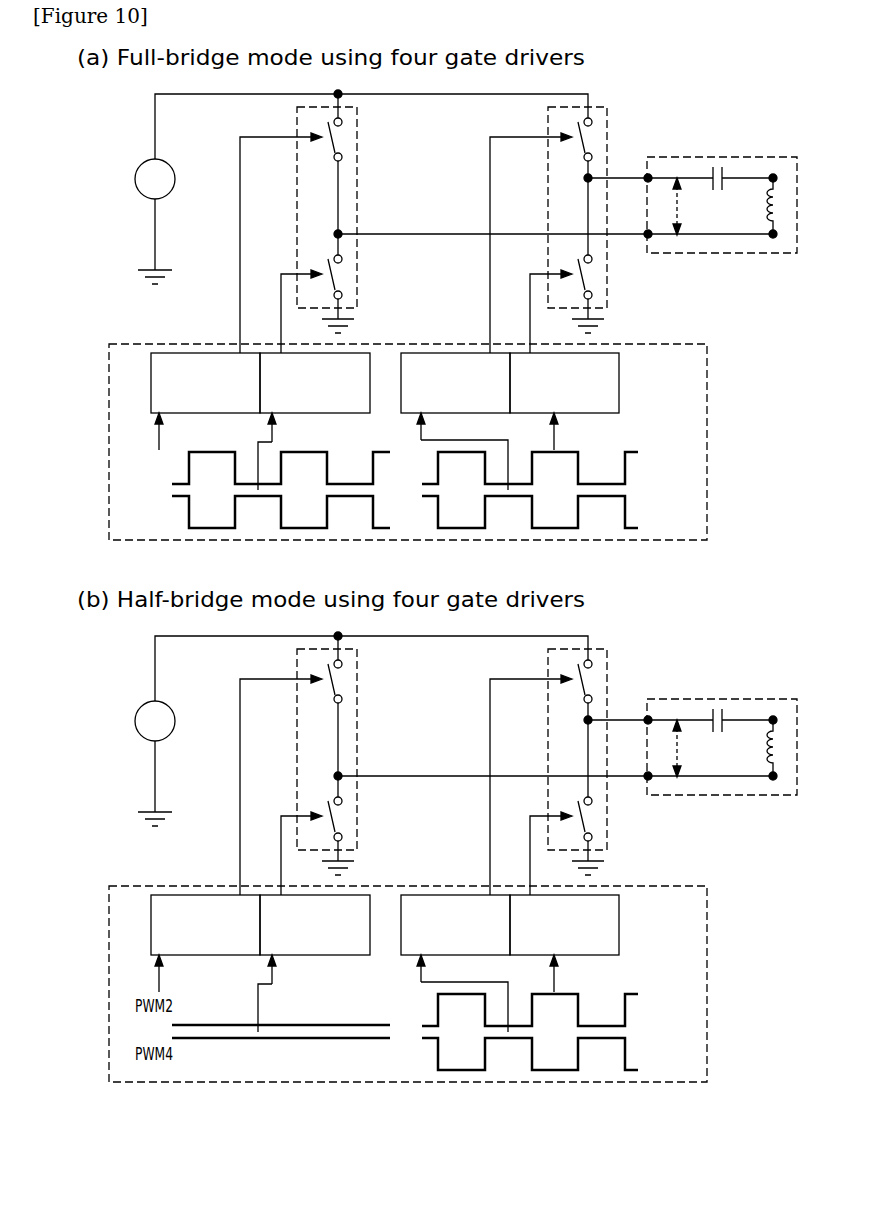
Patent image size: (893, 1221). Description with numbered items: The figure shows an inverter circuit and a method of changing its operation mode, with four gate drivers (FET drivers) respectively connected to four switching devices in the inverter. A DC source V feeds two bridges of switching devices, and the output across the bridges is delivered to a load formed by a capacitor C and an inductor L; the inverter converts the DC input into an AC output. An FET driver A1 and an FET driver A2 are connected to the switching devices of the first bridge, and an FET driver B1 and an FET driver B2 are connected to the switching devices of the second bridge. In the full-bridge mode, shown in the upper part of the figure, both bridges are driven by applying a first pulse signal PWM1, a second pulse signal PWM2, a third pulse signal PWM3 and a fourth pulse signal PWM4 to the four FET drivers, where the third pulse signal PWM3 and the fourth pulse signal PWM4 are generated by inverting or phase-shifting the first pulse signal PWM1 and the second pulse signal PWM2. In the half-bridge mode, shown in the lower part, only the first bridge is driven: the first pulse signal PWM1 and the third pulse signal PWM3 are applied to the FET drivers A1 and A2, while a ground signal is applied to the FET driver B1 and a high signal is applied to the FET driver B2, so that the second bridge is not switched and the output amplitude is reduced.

The DC voltage source V is at (154, 171).
The resonant capacitor C is at (717, 189).
The resonant inductor (coil) L is at (763, 206).
The FET driver B1 is at (205, 383).
The FET driver B2 is at (315, 383).
The FET driver A1 is at (455, 383).
The FET driver A2 is at (564, 383).
The first pulse signal PWM1 is at (555, 467).
The second pulse signal PWM2 is at (262, 468).
The third pulse signal PWM3 is at (555, 512).
The fourth pulse signal PWM4 is at (262, 512).